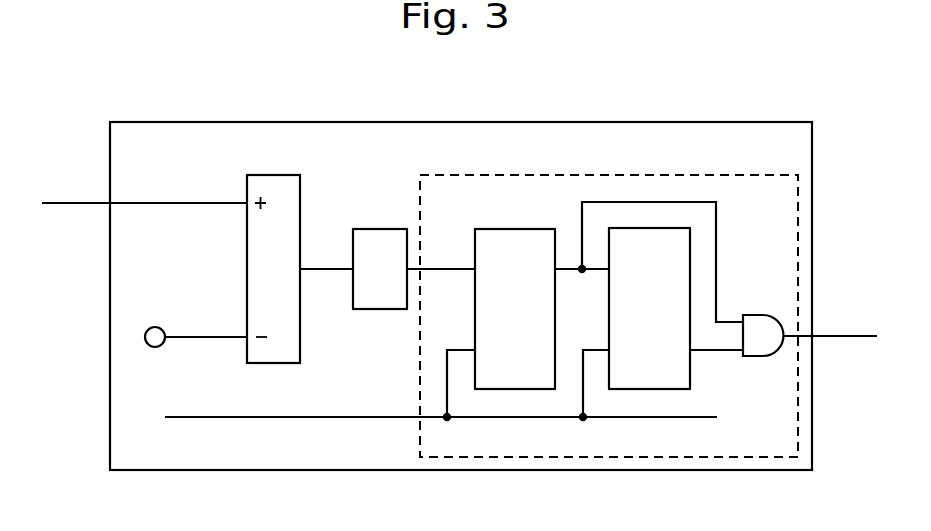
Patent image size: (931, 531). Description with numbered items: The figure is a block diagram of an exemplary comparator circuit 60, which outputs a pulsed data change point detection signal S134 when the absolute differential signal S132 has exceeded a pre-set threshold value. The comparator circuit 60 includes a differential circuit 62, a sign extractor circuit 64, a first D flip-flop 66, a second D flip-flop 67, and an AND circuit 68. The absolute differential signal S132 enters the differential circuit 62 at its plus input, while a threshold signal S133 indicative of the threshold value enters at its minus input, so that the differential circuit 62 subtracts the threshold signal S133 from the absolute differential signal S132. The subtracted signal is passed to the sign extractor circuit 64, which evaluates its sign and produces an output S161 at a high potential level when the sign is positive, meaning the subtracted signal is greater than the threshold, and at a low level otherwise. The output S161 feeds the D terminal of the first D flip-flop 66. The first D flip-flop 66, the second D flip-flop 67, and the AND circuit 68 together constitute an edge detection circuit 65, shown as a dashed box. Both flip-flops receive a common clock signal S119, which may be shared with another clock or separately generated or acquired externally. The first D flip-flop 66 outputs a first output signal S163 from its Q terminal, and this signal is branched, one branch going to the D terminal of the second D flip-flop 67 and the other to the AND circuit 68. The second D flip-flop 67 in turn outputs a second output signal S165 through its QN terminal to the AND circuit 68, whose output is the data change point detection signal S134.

The comparator circuit 60 is at (207, 122).
The differential circuit 62 is at (270, 175).
The sign extractor circuit 64 is at (380, 229).
The edge detection circuit 65 is at (616, 175).
The first D flip-flop 66 is at (508, 389).
The second D flip-flop 67 is at (650, 389).
The AND circuit 68 is at (760, 315).
The absolute differential signal S132 is at (83, 189).
The threshold signal S133 is at (220, 323).
The clock signal S119 is at (380, 404).
The output from the sign extractor circuit S161 is at (463, 255).
The first output signal S163 is at (597, 283).
The second output signal S165 is at (732, 362).
The data change point detection signal S134 is at (865, 322).